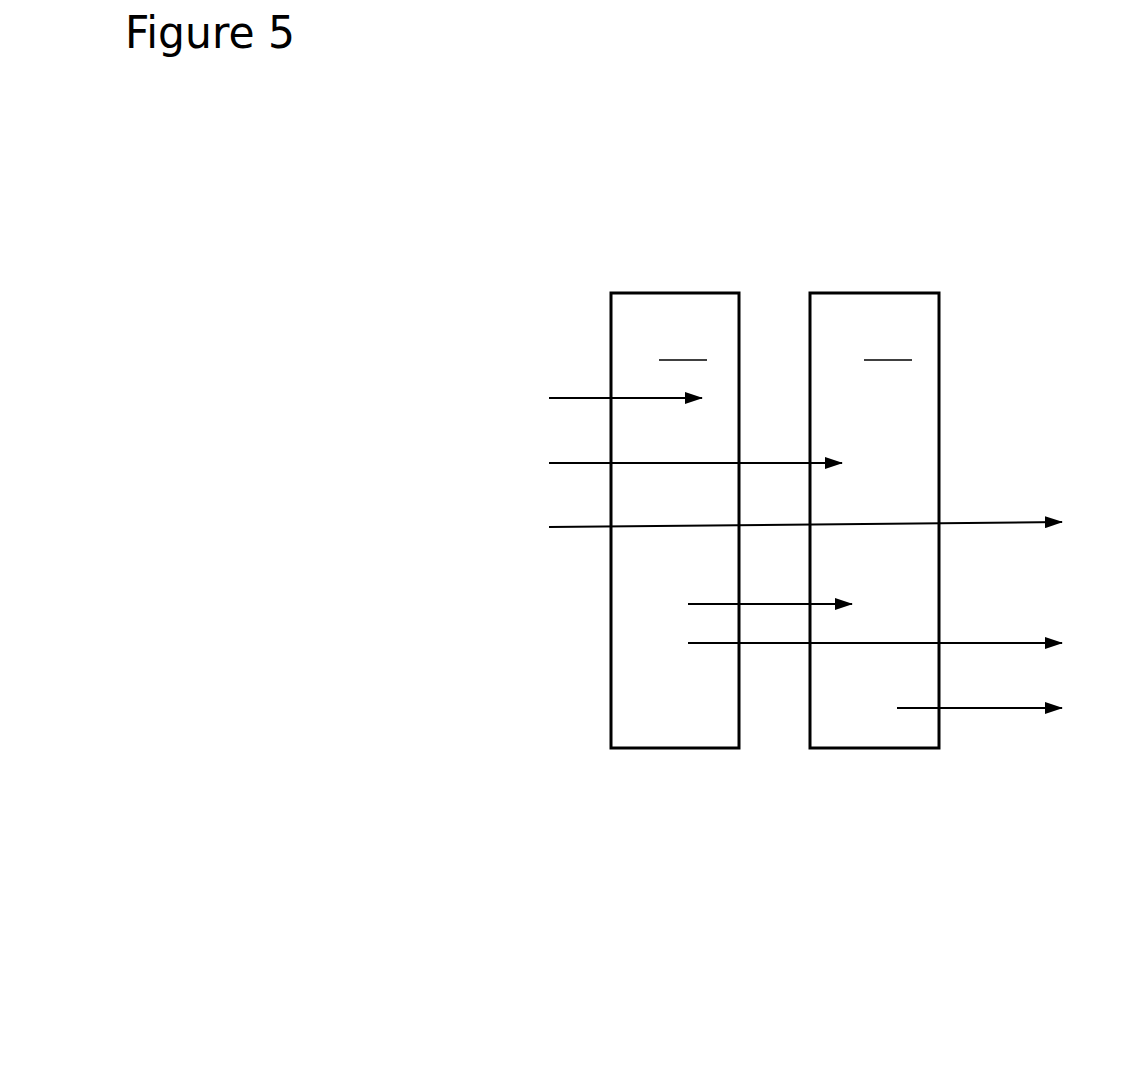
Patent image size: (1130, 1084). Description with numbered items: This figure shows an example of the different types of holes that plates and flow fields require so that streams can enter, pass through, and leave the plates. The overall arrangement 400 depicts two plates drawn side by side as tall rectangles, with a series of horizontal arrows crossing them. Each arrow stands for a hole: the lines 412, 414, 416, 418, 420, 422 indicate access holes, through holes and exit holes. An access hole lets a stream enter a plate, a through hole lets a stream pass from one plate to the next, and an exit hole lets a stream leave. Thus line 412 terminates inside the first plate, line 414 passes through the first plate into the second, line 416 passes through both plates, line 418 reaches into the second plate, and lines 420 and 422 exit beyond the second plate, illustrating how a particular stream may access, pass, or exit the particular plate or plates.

The packet processing pipeline 400 is at (510, 802).
The hole line 412 is at (586, 397).
The hole line 414 is at (586, 462).
The hole line 416 is at (586, 526).
The hole line 418 is at (715, 603).
The hole line 420 is at (983, 645).
The hole line 422 is at (983, 710).